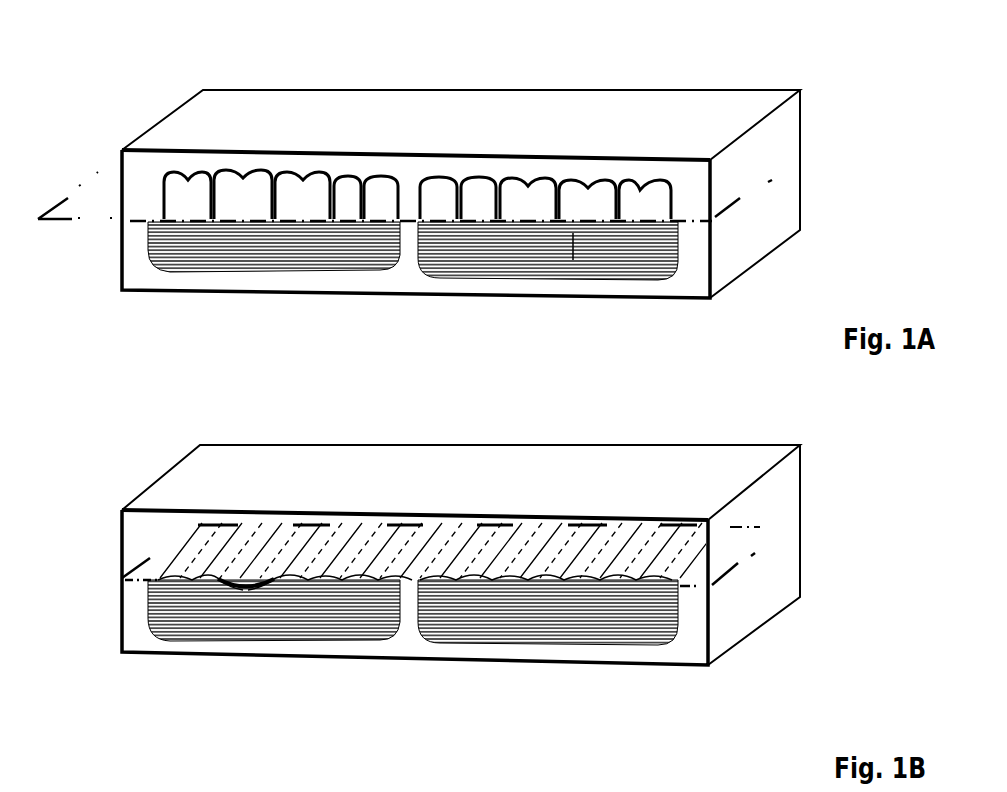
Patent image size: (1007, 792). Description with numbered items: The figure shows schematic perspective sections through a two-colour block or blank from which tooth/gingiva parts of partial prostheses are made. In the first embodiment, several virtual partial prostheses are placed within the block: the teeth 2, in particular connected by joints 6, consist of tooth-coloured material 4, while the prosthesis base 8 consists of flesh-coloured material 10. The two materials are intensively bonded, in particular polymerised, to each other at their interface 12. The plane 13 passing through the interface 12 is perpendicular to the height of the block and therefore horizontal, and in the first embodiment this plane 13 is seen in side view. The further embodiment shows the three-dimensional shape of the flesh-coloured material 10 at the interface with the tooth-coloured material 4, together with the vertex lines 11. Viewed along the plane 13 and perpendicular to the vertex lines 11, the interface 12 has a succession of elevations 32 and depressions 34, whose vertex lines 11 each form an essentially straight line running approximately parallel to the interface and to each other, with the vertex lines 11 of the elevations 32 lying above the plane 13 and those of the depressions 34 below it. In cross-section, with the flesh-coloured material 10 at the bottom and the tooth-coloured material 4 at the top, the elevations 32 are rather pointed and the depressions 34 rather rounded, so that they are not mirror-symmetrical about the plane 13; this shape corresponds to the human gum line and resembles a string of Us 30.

In FIG. 1A, the teeth 2 is at (638, 208).
In FIG. 1A, the tooth-coloured material 4 is at (307, 162).
In FIG. 1B, the tooth-coloured material 4 is at (152, 537).
In FIG. 1A, the joints 6 is at (496, 192).
In FIG. 1A, the prosthesis base 8 is at (680, 270).
In FIG. 1A, the flesh-coloured material 10 is at (676, 250).
In FIG. 1B, the flesh-coloured material 10 is at (687, 627).
In FIG. 1B, the vertex lines 11 is at (730, 535).
In FIG. 1A, the interface 12 is at (573, 233).
In FIG. 1B, the interface 12 is at (245, 497).
In FIG. 1A, the plane 13 is at (770, 180).
In FIG. 1B, the plane 13 is at (770, 547).
In FIG. 1B, the string of Us 30 is at (253, 572).
In FIG. 1B, the elevations 32 is at (272, 580).
In FIG. 1B, the depressions 34 is at (243, 587).